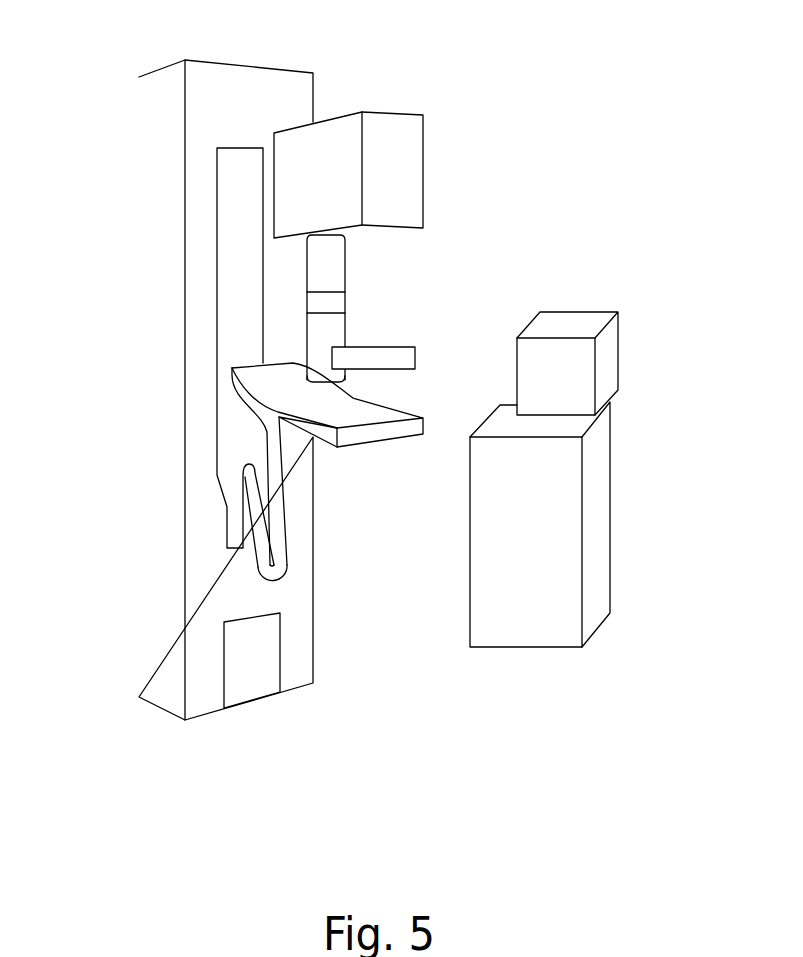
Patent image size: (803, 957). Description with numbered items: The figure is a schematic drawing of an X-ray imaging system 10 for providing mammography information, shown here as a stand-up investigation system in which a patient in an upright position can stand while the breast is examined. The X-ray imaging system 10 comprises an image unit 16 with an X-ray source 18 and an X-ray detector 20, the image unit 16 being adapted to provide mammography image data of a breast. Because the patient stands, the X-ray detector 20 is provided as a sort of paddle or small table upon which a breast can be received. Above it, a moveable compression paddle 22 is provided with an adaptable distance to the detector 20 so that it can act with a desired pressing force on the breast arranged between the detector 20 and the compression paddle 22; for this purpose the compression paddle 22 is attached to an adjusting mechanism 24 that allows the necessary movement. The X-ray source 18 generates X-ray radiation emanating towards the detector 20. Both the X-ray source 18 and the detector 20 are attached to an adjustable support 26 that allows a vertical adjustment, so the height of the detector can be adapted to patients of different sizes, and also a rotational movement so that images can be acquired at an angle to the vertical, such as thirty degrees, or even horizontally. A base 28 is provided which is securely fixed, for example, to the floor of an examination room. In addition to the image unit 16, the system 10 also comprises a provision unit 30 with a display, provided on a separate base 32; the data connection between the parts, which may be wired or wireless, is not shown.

The X-ray imaging system 10 is at (382, 82).
The image unit 16 is at (414, 182).
The X-ray source 18 is at (417, 203).
The X-ray detector 20 is at (357, 438).
The compression paddle 22 is at (407, 357).
The adjusting mechanism 24 is at (337, 327).
The adjustable support 26 is at (228, 336).
The base 28 is at (298, 598).
The provision unit 30 is at (587, 377).
The separate base 32 is at (598, 550).